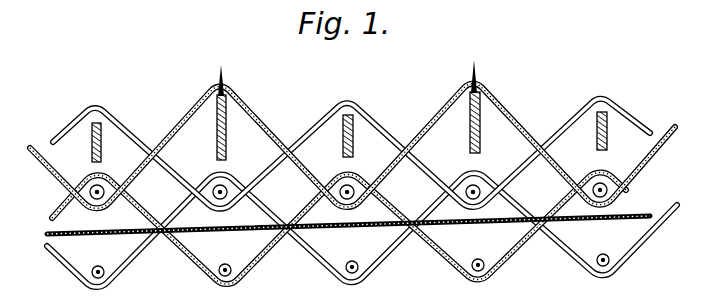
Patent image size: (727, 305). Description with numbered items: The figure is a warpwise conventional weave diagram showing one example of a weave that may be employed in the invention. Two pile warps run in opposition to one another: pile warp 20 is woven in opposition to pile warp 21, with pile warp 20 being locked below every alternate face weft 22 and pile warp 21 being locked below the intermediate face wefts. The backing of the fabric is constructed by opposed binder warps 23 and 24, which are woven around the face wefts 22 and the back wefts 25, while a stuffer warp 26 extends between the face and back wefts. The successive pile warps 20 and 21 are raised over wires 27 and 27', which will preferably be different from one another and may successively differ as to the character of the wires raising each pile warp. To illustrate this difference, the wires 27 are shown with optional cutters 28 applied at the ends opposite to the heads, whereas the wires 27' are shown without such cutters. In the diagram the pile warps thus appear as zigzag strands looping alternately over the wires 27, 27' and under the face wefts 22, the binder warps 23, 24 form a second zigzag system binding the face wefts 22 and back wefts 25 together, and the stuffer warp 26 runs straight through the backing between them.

The pile warp 20 is at (193, 109).
The pile warp 21 is at (107, 97).
The face weft 22 is at (228, 185).
The binder warp 23 is at (56, 207).
The binder warp 24 is at (70, 271).
The back weft 25 is at (102, 262).
The stuffer warp 26 is at (47, 233).
The wire 27 is at (250, 112).
The wire 27' is at (373, 122).
The cutter 28 is at (477, 78).